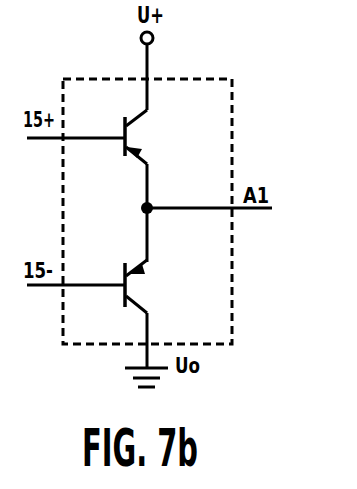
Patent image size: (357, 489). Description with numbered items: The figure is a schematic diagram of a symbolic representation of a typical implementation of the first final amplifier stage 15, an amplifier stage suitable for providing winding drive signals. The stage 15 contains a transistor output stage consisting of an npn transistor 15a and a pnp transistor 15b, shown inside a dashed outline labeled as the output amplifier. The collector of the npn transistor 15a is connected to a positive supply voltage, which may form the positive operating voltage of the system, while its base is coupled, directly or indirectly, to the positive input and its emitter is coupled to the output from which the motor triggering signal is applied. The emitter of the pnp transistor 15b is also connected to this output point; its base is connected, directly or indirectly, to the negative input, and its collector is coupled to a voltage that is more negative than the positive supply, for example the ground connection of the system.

The first final amplifier stage 15 is at (233, 161).
The npn transistor 15a is at (140, 152).
The pnp transistor 15b is at (140, 268).